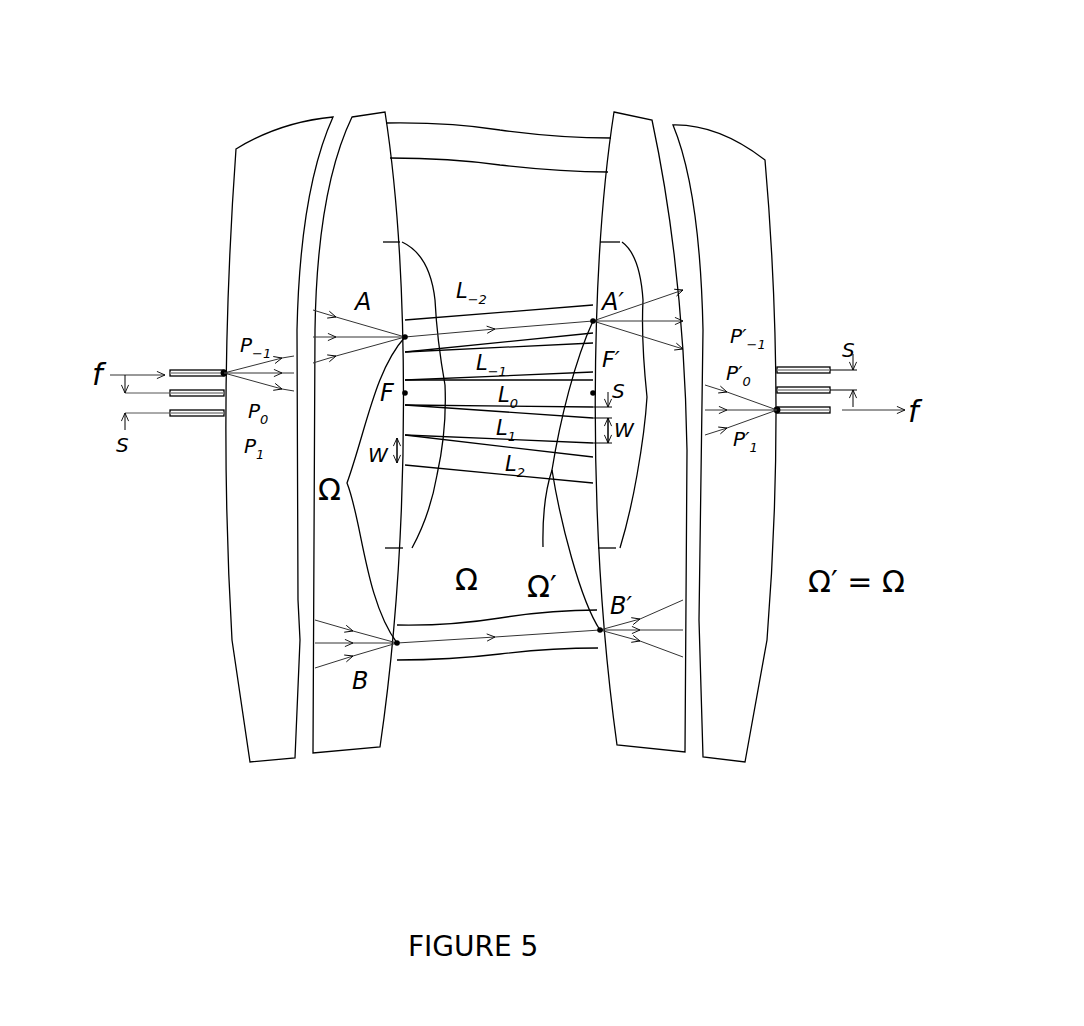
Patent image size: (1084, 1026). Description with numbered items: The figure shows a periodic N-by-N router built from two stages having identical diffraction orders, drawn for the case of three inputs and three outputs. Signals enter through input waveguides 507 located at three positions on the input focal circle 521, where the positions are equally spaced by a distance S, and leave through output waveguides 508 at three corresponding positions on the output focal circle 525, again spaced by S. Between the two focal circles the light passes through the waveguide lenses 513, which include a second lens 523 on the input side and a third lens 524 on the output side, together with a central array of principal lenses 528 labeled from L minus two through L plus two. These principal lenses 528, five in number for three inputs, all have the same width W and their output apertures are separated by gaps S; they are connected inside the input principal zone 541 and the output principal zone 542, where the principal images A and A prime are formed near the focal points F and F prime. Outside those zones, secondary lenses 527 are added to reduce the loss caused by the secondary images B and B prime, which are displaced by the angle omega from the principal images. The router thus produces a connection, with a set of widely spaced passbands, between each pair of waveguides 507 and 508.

The input waveguide 507 is at (204, 368).
The output waveguide 508 is at (788, 416).
The waveguide lenses 513 is at (605, 67).
The input focal circle 521 is at (235, 675).
The second waveguide lens 523 is at (390, 700).
The third waveguide lens 524 is at (605, 690).
The output focal circle 525 is at (768, 662).
The secondary lens 527 is at (468, 148).
The principal lens 528 is at (545, 318).
The input principal zone 541 is at (445, 385).
The output principal zone 542 is at (735, 400).